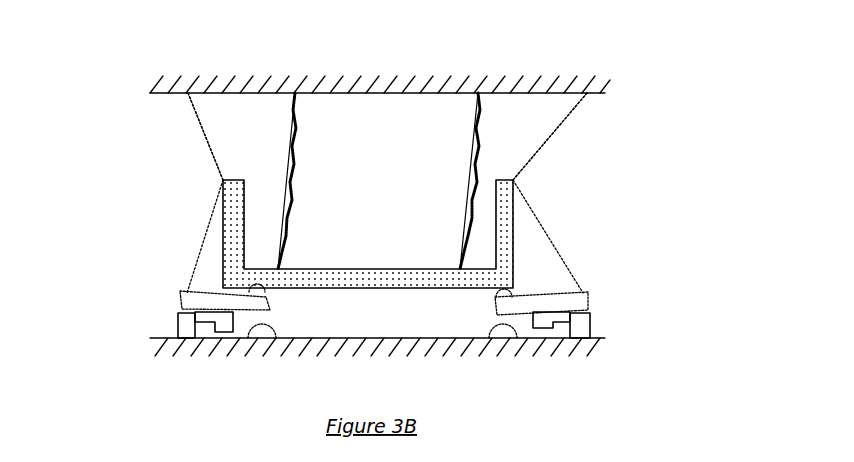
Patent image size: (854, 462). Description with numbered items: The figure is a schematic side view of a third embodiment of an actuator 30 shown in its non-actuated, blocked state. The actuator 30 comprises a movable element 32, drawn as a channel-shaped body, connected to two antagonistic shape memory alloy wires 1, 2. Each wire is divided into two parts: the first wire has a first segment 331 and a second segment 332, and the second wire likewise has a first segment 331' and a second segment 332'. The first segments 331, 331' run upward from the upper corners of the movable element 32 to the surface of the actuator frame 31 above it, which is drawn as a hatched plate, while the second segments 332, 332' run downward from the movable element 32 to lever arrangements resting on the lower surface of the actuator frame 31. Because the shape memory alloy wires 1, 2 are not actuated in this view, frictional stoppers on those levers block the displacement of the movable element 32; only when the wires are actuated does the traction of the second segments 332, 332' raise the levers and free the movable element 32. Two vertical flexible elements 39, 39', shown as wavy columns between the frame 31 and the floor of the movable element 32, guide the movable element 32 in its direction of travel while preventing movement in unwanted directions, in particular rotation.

The shape memory alloy wire 1 is at (192, 108).
The shape memory alloy wire 2 is at (567, 115).
The actuator 30 is at (653, 152).
The actuator frame 31 is at (402, 91).
The movable element 32 is at (373, 278).
The vertical flexible element 39 is at (248, 149).
The vertical flexible element 39' is at (427, 181).
The first segment 331 is at (146, 146).
The first segment 331' is at (588, 157).
The second segment 332 is at (139, 236).
The second segment 332' is at (606, 236).